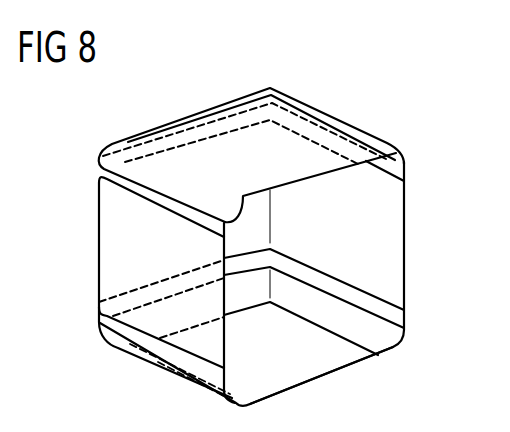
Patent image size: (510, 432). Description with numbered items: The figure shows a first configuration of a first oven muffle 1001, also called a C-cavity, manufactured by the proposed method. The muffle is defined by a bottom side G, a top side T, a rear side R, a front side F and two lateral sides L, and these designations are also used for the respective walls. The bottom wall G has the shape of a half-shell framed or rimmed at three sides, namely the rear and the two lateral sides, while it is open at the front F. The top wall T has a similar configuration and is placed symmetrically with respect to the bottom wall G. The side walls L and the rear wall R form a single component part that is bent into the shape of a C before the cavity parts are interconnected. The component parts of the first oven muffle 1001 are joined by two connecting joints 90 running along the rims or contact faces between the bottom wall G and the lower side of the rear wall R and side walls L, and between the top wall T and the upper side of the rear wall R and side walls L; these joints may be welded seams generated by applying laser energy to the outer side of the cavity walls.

The first oven muffle 1001 is at (387, 89).
The top wall T is at (248, 148).
The rear wall R is at (99, 224).
The lateral side walls L is at (404, 253).
The front side F is at (313, 352).
The bottom wall G is at (300, 387).
The connecting joints 90 is at (404, 173).